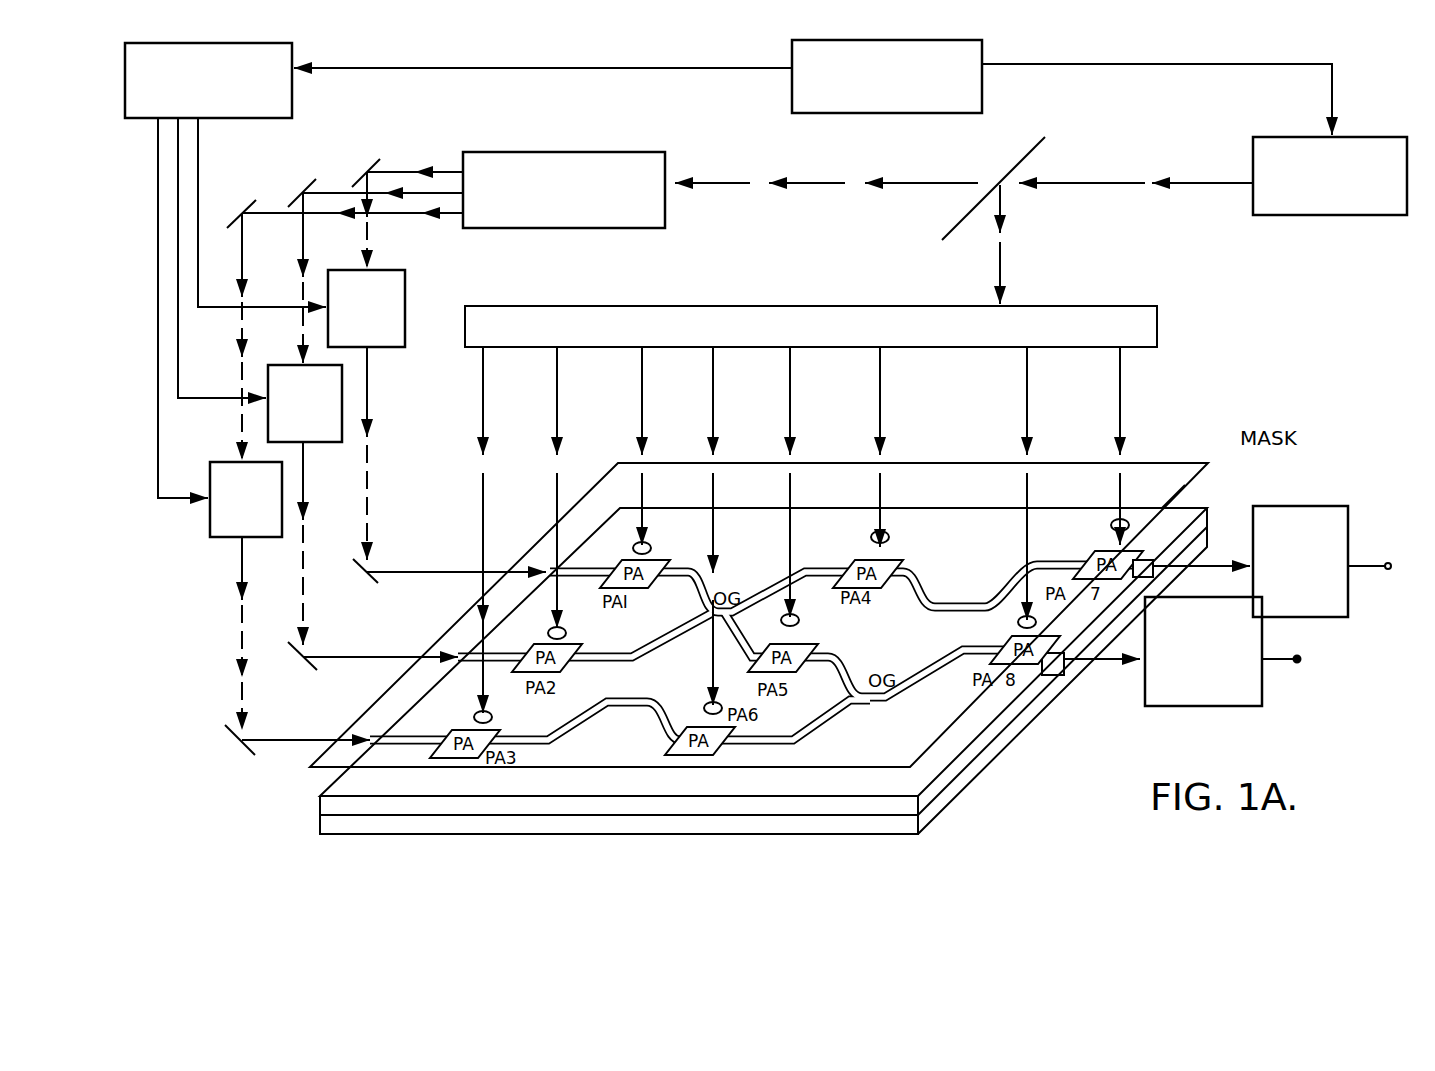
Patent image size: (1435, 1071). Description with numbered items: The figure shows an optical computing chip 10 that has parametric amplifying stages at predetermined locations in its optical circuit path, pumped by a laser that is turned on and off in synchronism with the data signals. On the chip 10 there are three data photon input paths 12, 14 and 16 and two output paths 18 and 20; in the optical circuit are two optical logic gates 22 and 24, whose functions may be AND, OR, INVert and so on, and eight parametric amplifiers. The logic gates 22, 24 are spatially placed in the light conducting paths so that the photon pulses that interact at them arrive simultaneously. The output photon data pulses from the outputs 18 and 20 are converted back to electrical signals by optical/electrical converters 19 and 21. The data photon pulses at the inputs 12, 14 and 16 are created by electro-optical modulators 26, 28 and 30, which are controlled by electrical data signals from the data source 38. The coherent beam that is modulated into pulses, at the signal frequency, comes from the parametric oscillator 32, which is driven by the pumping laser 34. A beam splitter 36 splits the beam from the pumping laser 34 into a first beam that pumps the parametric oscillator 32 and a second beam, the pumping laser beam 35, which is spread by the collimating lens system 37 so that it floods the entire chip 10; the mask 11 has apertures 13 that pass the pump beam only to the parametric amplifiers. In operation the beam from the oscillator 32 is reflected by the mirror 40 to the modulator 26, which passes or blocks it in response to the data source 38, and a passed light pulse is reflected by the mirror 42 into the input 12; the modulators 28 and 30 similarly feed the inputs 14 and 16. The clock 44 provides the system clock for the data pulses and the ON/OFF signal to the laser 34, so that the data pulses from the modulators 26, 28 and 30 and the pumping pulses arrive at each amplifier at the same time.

The optical computing chip 10 is at (803, 782).
The mask 11 is at (1208, 463).
The data photon input path 12 is at (583, 570).
The apertures 13 is at (1120, 520).
The data photon input path 14 is at (498, 657).
The data photon input path 16 is at (424, 740).
The output path 18 is at (1165, 525).
The optical/electrical converter 19 is at (1310, 506).
The output path 20 is at (1042, 675).
The optical/electrical converter 21 is at (1240, 706).
The optical logic gate 22 is at (734, 580).
The optical logic gate 24 is at (885, 700).
The electro-optical modulator 26 is at (405, 290).
The electro-optical modulator 28 is at (318, 442).
The electro-optical modulator 30 is at (228, 537).
The parametric oscillator 32 is at (573, 152).
The pumping laser 34 is at (1340, 215).
The pumping laser beam 35 is at (1002, 278).
The beam splitter 36 is at (955, 226).
The collimating lens system 37 is at (1088, 306).
The data source 38 is at (292, 93).
The mirror 40 is at (370, 162).
The mirror 42 is at (370, 585).
The clock 44 is at (792, 93).